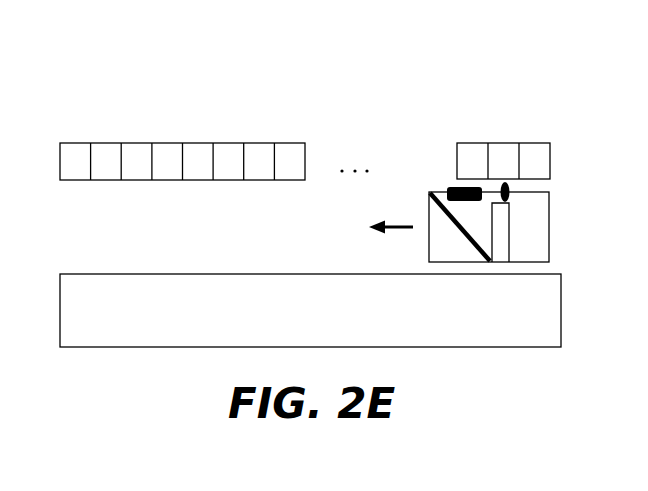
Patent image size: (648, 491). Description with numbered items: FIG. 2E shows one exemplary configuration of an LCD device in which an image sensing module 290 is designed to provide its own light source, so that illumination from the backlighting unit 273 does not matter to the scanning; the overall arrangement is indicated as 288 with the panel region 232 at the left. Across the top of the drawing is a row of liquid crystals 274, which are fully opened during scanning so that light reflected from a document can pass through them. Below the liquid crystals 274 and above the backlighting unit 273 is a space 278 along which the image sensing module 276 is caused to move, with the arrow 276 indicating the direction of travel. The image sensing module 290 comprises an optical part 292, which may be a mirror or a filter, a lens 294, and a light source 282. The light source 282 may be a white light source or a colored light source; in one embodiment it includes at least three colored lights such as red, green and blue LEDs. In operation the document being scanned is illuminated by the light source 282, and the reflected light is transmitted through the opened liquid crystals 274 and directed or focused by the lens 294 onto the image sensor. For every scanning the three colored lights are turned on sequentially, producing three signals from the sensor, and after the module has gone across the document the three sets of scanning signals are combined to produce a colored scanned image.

The display device 288 is at (368, 55).
The liquid crystals 274 is at (156, 161).
The display panel 232 is at (9, 242).
The space 278 is at (266, 229).
The image sensing module 276 is at (401, 214).
The backlighting unit 273 is at (280, 310).
The light source 282 is at (510, 249).
The image sensing module 290 is at (447, 187).
The optical part 292 is at (450, 187).
The lens 294 is at (515, 202).